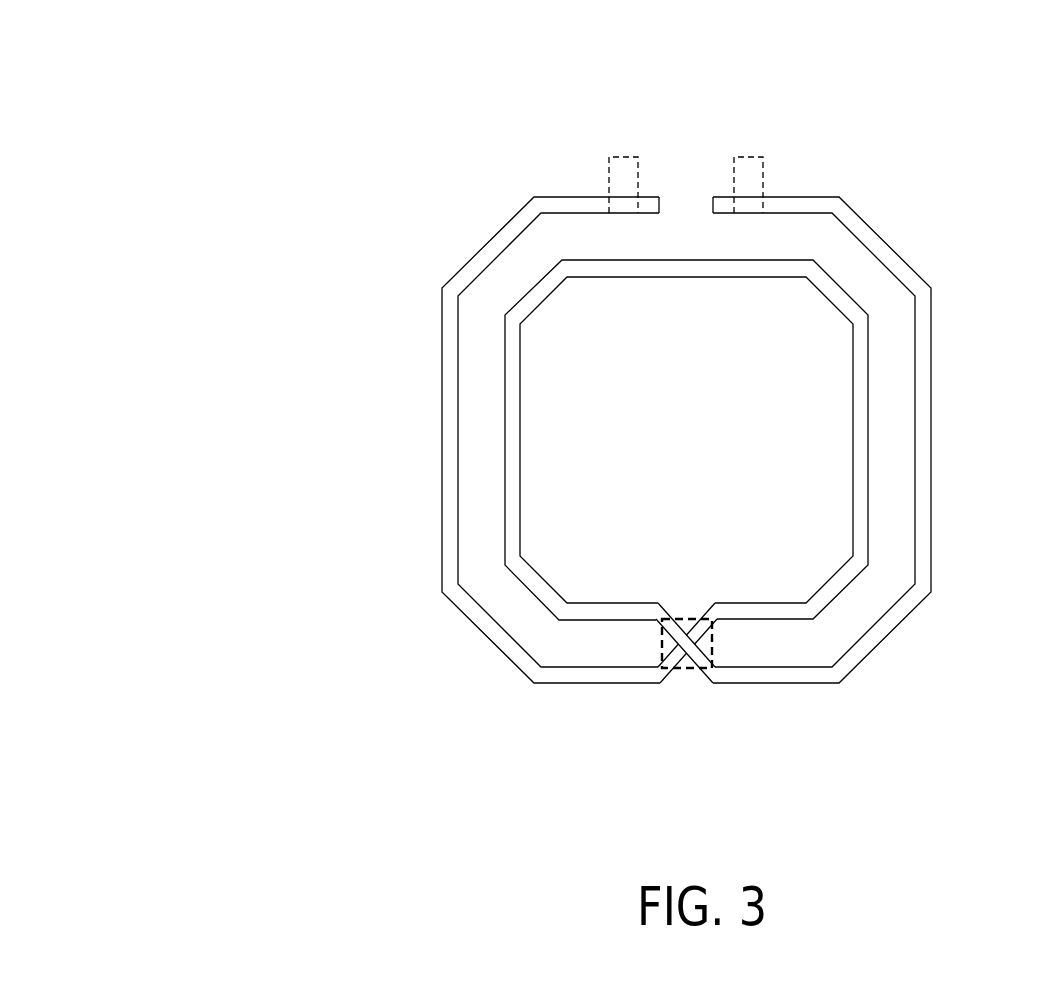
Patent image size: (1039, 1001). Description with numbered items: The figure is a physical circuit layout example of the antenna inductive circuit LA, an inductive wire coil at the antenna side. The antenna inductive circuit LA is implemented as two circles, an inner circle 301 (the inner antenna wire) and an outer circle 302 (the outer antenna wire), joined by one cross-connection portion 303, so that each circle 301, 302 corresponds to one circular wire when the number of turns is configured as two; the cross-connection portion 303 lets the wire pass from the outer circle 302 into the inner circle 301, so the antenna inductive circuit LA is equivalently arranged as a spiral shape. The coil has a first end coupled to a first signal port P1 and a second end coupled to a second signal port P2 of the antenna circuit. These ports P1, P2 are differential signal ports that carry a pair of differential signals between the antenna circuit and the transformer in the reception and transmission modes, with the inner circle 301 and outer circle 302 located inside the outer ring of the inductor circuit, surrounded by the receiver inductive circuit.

The antenna inductive circuit LA is at (168, 88).
The inner circle 301 is at (858, 460).
The outer circle 302 is at (925, 459).
The cross-connection portion 303 is at (693, 668).
The first signal port P1 is at (748, 168).
The second signal port P2 is at (623, 168).